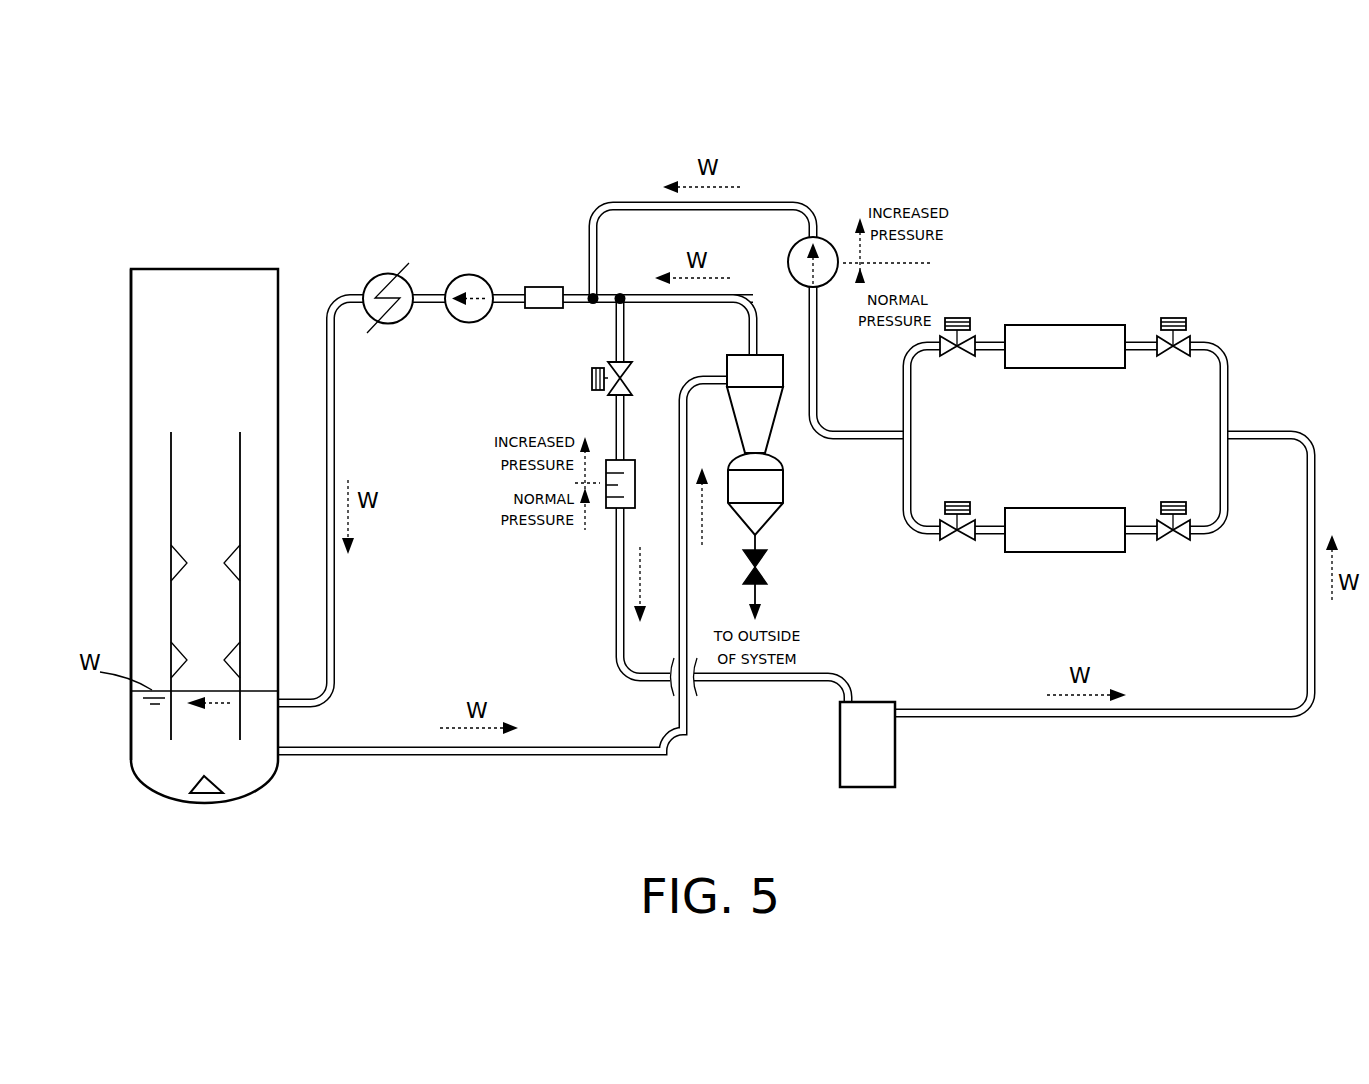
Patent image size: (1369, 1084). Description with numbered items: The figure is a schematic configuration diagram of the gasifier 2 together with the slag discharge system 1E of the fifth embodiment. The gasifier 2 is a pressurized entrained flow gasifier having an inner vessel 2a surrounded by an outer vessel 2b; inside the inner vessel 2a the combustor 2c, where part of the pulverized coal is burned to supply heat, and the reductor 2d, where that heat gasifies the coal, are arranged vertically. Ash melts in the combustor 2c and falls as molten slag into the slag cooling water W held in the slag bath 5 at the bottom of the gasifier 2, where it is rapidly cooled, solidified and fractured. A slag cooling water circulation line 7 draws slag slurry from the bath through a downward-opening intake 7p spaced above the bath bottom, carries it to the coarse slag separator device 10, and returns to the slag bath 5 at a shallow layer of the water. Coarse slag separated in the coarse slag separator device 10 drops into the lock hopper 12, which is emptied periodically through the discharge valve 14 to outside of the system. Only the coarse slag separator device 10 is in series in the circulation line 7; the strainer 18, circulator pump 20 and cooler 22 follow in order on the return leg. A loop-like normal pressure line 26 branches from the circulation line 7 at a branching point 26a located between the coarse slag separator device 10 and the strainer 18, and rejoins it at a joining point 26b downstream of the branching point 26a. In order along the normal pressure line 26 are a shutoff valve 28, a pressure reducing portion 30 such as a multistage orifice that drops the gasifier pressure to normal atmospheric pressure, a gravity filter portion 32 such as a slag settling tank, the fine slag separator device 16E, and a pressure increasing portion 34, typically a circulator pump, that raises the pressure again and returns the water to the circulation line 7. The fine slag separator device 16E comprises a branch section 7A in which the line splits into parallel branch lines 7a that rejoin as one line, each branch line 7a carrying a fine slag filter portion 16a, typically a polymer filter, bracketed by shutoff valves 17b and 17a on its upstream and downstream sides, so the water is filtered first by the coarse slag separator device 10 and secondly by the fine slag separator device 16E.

The slag discharge system 1E is at (285, 122).
The gasifier 2 is at (165, 536).
The inner vessel 2a is at (155, 586).
The outer vessel 2b is at (87, 514).
The combustor 2c is at (205, 636).
The reductor 2d is at (205, 522).
The slag bath 5 is at (171, 721).
The slag cooling water circulation line 7 is at (479, 536).
The intake 7p is at (245, 800).
The branch lines 7a is at (1090, 410).
The branch section 7A is at (1066, 482).
The coarse slag separator device 10 is at (727, 388).
The lock hopper 12 is at (792, 494).
The discharge valve 14 is at (800, 577).
The fine slag separator device 16E is at (1066, 354).
The fine slag filter portion 16a is at (1065, 399).
The shutoff valve 17a is at (1172, 393).
The shutoff valve 17b is at (960, 393).
The strainer 18 is at (544, 258).
The circulator pump 20 is at (469, 259).
The cooler 22 is at (388, 264).
The normal pressure line 26 is at (923, 419).
The branching point 26a is at (636, 265).
The joining point 26b is at (566, 328).
The shutoff valve 28 is at (572, 380).
The pressure reducing portion 30 is at (635, 452).
The gravity filter portion 32 is at (825, 744).
The pressure increasing portion 34 is at (778, 255).